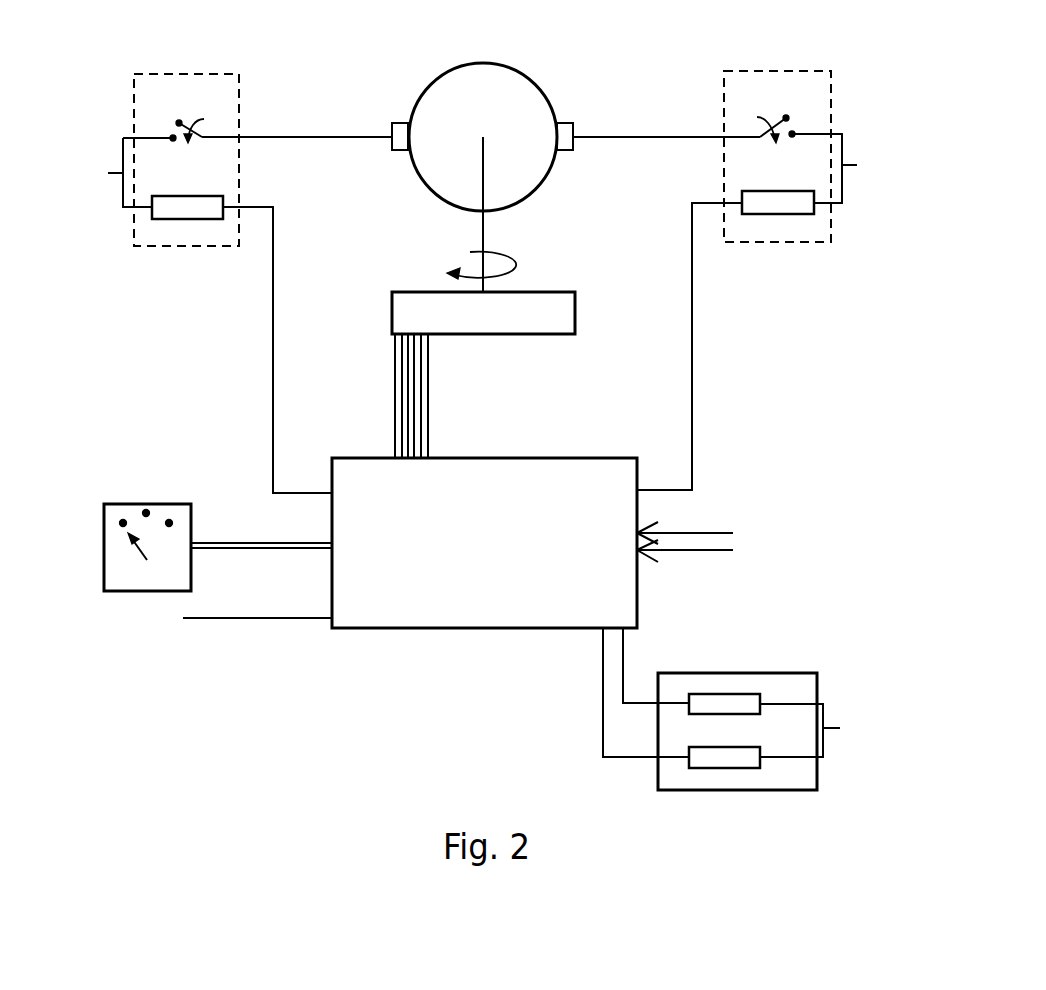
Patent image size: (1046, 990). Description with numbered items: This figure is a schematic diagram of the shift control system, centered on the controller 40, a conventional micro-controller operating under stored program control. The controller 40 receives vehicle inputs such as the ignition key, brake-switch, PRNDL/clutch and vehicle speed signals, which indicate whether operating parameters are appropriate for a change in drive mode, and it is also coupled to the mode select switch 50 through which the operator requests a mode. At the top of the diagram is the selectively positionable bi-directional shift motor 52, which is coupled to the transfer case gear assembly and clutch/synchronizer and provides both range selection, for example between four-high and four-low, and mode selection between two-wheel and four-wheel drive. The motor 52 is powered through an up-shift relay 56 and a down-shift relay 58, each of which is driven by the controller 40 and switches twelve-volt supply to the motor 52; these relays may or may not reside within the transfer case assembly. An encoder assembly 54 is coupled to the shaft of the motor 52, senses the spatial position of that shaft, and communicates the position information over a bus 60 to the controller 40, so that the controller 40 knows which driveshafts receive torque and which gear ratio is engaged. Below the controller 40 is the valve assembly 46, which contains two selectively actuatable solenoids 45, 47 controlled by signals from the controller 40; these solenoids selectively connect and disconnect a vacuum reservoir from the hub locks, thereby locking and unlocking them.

The controller 40 is at (502, 507).
The solenoid 45 is at (689, 701).
The valve assembly 46 is at (817, 680).
The solenoid 47 is at (689, 763).
The mode select switch 50 is at (104, 573).
The motor 52 is at (547, 95).
The encoder assembly 54 is at (578, 310).
The up-shift relay 56 is at (240, 98).
The down-shift relay 58 is at (831, 97).
The bus 60 is at (430, 413).